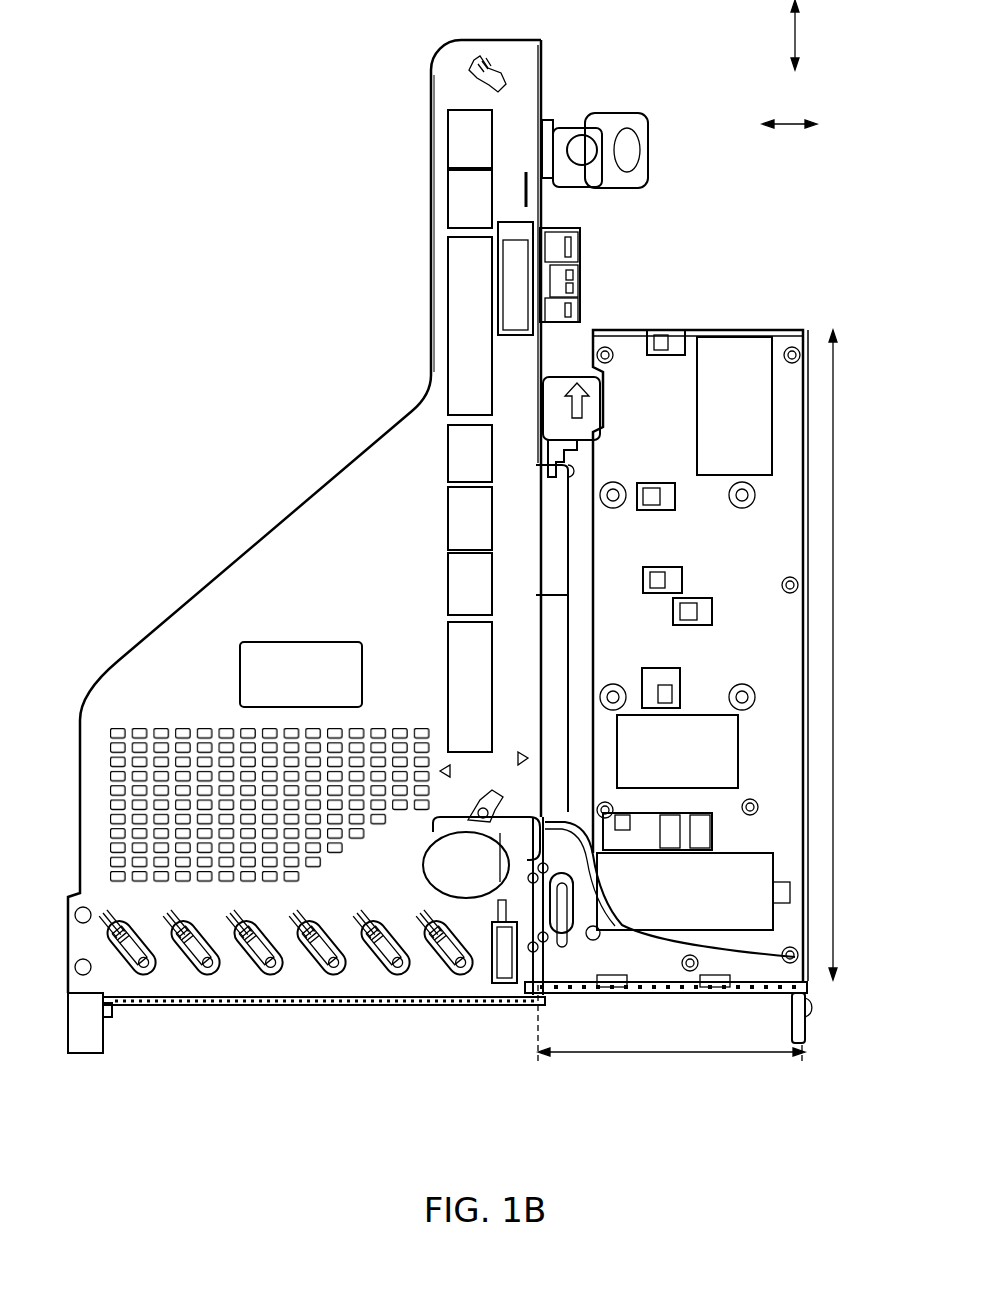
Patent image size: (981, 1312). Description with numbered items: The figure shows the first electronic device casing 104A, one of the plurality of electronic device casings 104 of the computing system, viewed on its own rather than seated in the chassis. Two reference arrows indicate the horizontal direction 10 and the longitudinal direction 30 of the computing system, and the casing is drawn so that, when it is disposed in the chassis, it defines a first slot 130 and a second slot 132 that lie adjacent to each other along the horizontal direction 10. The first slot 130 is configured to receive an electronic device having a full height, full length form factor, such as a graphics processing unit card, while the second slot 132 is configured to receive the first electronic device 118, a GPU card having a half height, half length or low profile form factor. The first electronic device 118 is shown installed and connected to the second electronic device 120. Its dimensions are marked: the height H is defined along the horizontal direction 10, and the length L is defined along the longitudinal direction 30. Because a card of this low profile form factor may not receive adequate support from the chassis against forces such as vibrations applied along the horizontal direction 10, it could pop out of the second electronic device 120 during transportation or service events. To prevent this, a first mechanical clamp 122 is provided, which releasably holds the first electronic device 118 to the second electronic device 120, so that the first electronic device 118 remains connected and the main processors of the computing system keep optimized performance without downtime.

The electronic device casings 104 is at (431, 544).
The first electronic device casing 104A is at (290, 168).
The horizontal direction 10 is at (790, 124).
The longitudinal direction 30 is at (794, 25).
The first electronic device 118 is at (673, 383).
The second electronic device 120 is at (555, 512).
The first mechanical clamp 122 is at (568, 380).
The first slot 130 is at (309, 1041).
The second slot 132 is at (722, 1071).
The length L is at (835, 692).
The height H is at (630, 1055).